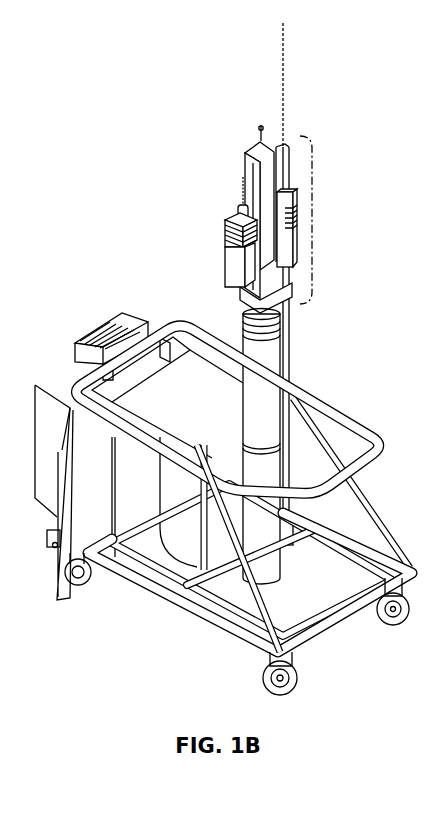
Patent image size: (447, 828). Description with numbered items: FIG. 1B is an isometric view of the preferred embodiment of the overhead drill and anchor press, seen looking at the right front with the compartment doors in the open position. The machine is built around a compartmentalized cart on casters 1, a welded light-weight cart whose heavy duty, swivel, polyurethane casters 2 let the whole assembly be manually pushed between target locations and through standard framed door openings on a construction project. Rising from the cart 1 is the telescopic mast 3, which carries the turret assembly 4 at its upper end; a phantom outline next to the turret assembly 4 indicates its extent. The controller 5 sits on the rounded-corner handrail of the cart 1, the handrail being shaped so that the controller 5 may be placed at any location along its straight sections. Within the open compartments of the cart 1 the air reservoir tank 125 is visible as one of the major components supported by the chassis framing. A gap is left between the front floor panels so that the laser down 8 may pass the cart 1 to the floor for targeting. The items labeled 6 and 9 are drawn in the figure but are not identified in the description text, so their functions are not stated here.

The compartmentalized cart on casters 1 is at (328, 390).
The casters 2 is at (262, 678).
The telescopic mast 3 is at (252, 350).
The turret assembly 4 is at (314, 229).
The controller 5 is at (142, 310).
The tray 6 is at (166, 518).
The laser down 8 is at (291, 352).
The motor unit 9 is at (293, 288).
The air reservoir tank 125 is at (166, 515).